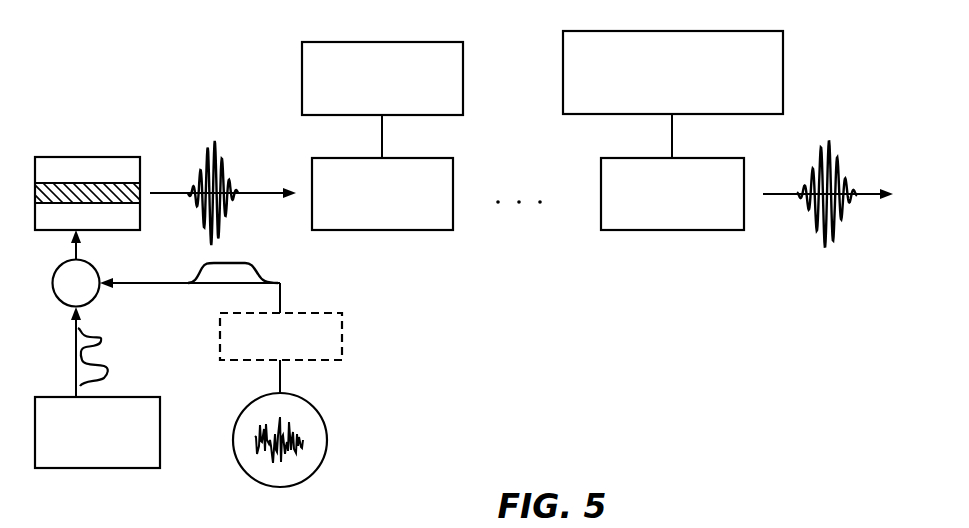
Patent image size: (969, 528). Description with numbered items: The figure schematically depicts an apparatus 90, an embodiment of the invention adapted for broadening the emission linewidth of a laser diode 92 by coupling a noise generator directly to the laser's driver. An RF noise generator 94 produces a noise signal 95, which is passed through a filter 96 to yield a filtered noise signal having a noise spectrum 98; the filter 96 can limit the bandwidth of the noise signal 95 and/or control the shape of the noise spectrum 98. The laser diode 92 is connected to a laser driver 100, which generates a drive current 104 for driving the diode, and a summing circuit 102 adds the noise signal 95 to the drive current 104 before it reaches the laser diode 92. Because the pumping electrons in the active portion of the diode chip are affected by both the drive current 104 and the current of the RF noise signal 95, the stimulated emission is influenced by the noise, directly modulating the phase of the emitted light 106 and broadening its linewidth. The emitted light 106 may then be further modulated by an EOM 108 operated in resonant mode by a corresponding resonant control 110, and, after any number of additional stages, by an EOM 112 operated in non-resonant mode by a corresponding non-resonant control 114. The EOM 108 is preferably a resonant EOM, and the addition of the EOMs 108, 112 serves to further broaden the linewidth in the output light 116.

The apparatus 90 is at (116, 46).
The laser diode 92 is at (67, 158).
The RF noise generator 94 is at (314, 476).
The noise signal 95 is at (288, 424).
The filter 96 is at (343, 336).
The noise spectrum 98 is at (251, 263).
The laser driver 100 is at (160, 455).
The summing circuit 102 is at (60, 301).
The drive current 104 is at (117, 359).
The emitted light 106 is at (228, 153).
The EOM 108 is at (427, 231).
The resonant control 110 is at (301, 48).
The EOM 112 is at (696, 231).
The non-resonant control 114 is at (784, 51).
The output light 116 is at (844, 153).